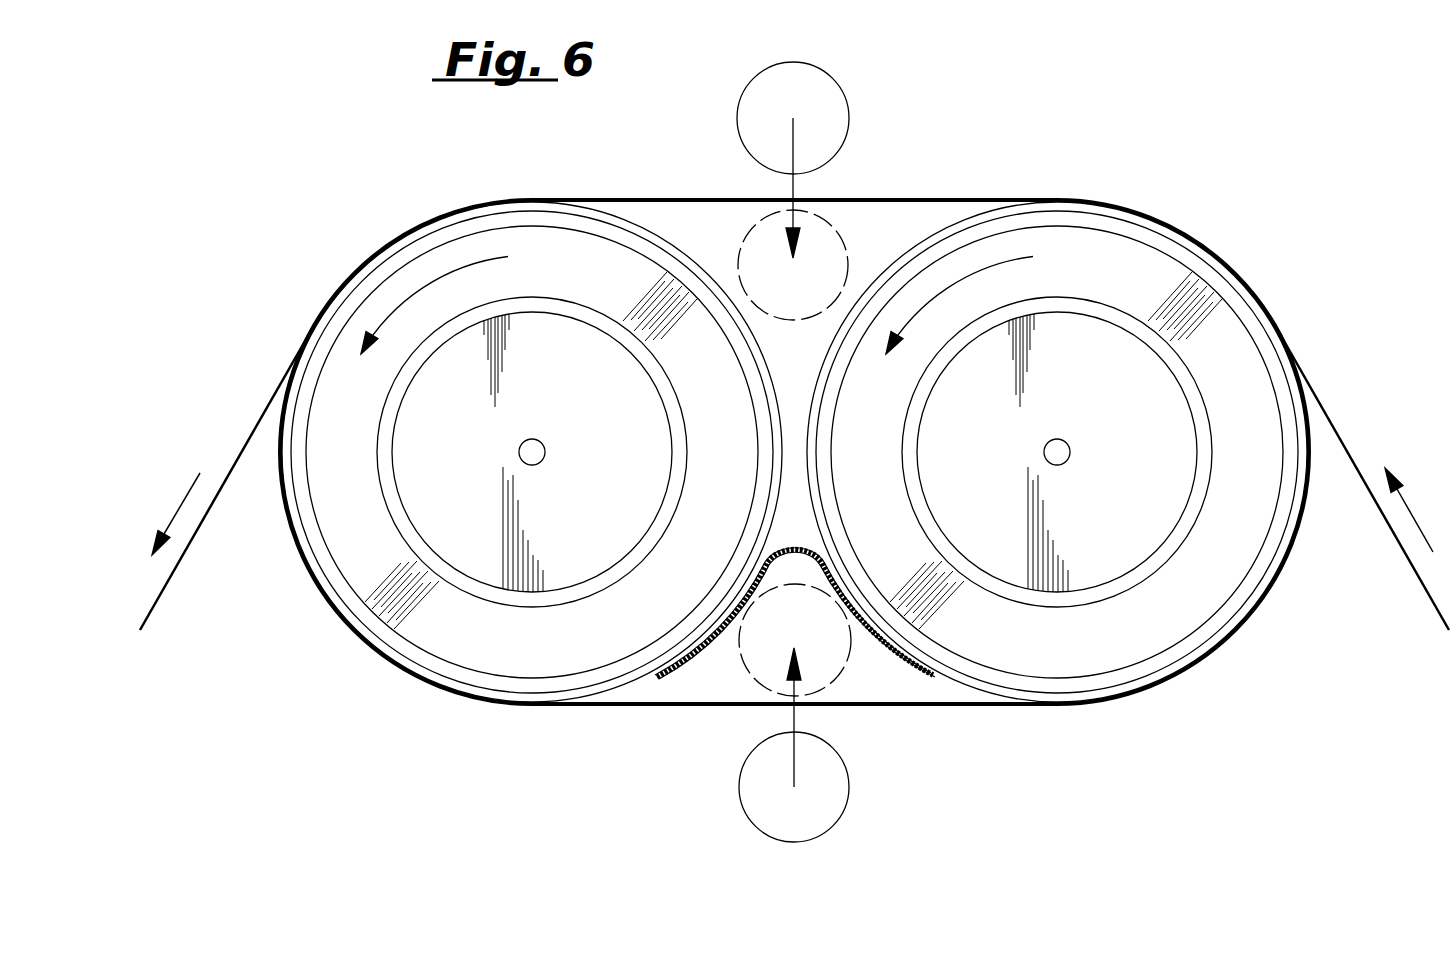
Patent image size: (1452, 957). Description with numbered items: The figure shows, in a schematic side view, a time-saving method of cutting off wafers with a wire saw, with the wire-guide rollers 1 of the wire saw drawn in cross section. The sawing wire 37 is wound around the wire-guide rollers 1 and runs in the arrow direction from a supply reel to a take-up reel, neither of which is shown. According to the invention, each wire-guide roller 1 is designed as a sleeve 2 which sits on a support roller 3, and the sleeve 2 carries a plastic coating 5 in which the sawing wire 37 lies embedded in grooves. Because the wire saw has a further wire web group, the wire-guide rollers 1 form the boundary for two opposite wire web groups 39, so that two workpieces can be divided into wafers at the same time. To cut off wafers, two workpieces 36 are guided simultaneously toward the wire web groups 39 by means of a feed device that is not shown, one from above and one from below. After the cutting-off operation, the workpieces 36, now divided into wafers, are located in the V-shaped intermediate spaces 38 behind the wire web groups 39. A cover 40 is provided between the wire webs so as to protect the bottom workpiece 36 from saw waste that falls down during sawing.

The wire-guide roller 1 is at (386, 243).
The sleeve 2 is at (345, 312).
The support roller 3 is at (365, 568).
The plastic coating 5 is at (478, 222).
The workpiece 36 is at (832, 240).
The sawing wire 37 is at (906, 200).
The V-shaped intermediate space 38 is at (718, 232).
The wire web group 39 is at (686, 198).
The cover 40 is at (912, 672).